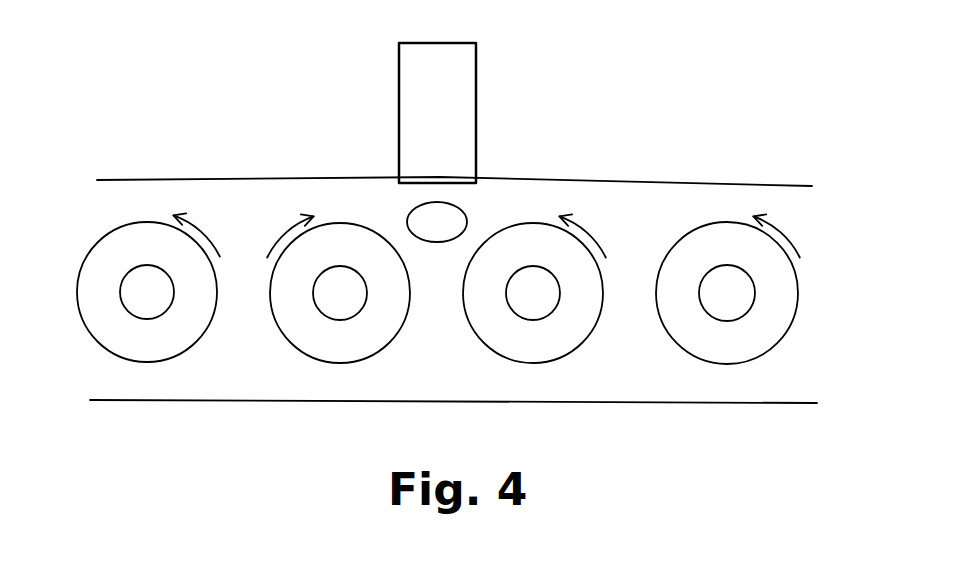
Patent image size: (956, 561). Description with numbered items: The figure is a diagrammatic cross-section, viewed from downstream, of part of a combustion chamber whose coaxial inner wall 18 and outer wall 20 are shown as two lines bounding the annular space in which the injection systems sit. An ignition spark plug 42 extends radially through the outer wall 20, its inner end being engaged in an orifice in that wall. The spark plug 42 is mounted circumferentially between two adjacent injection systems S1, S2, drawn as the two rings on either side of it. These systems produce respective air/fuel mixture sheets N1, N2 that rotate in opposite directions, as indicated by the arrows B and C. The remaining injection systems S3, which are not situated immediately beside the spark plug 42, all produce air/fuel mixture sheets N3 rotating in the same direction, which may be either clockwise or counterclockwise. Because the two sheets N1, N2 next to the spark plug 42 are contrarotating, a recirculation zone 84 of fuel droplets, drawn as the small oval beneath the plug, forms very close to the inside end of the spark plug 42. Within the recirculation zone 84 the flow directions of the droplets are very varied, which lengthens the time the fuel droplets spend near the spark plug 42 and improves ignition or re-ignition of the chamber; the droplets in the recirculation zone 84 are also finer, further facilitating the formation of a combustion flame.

The inner wall 18 is at (628, 401).
The outer wall 20 is at (717, 181).
The ignition spark plug 42 is at (476, 67).
The recirculation zone 84 is at (460, 210).
The air/fuel mixture sheet N1 is at (363, 227).
The injection system S1 is at (340, 266).
The air/fuel mixture sheet N2 is at (506, 226).
The injection system S2 is at (532, 266).
The air/fuel mixture sheet N3 is at (132, 222).
The injection system S3 is at (120, 300).
The arrow B is at (273, 245).
The arrow C is at (597, 240).